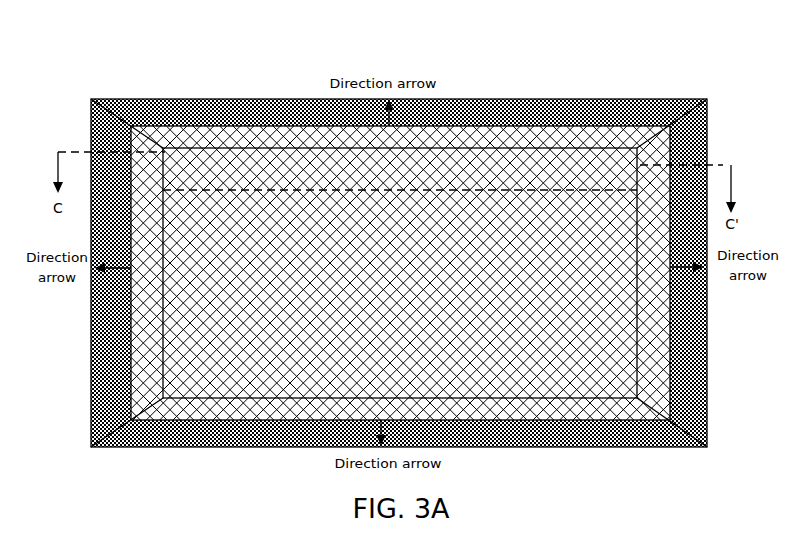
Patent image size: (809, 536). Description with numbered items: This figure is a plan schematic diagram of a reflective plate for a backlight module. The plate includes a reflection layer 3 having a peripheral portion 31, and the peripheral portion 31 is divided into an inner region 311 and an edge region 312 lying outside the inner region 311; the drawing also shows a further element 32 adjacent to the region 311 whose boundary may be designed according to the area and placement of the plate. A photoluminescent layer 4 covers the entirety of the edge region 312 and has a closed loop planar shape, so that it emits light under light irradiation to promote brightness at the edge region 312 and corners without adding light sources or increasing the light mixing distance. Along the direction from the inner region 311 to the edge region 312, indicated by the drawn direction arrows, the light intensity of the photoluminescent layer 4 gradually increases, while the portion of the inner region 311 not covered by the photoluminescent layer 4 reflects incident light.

The reflection layer 3 is at (399, 229).
The peripheral portion 31 is at (399, 243).
The inner region 311 is at (597, 133).
The edge region 312 is at (632, 115).
The inner edge line 32 is at (553, 148).
The photoluminescent layer 4 is at (381, 229).